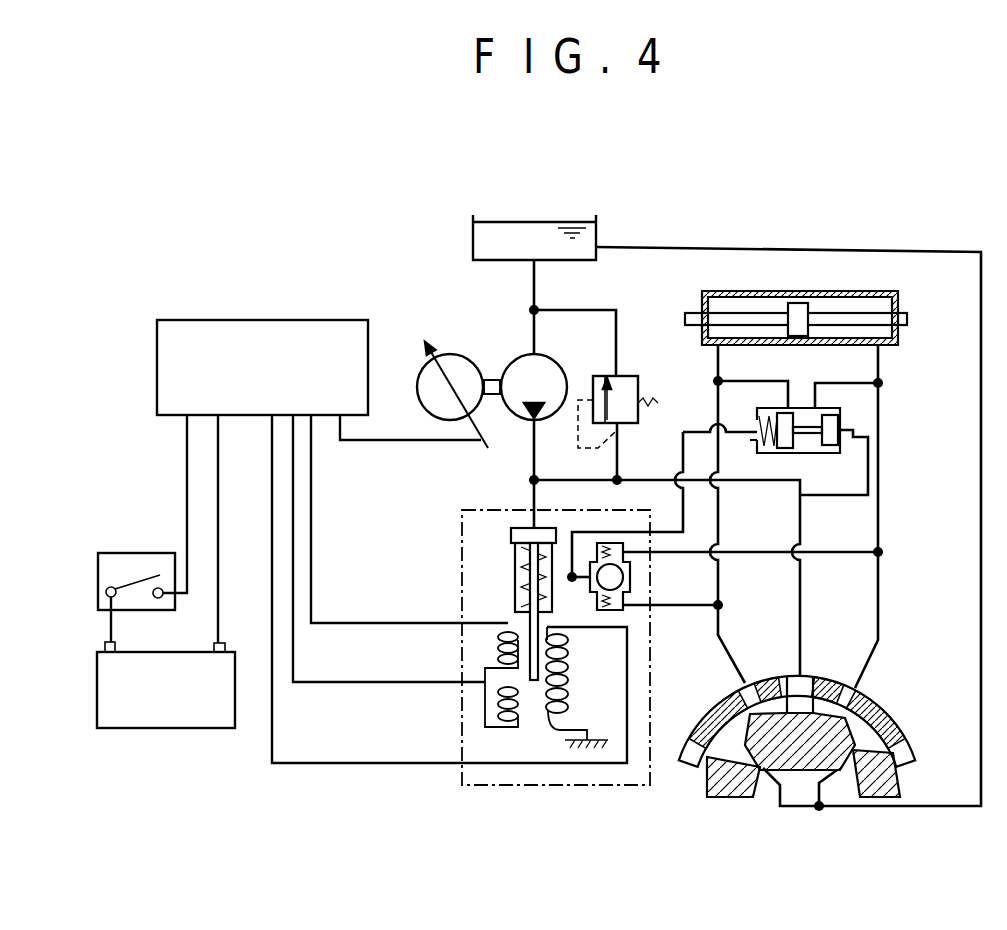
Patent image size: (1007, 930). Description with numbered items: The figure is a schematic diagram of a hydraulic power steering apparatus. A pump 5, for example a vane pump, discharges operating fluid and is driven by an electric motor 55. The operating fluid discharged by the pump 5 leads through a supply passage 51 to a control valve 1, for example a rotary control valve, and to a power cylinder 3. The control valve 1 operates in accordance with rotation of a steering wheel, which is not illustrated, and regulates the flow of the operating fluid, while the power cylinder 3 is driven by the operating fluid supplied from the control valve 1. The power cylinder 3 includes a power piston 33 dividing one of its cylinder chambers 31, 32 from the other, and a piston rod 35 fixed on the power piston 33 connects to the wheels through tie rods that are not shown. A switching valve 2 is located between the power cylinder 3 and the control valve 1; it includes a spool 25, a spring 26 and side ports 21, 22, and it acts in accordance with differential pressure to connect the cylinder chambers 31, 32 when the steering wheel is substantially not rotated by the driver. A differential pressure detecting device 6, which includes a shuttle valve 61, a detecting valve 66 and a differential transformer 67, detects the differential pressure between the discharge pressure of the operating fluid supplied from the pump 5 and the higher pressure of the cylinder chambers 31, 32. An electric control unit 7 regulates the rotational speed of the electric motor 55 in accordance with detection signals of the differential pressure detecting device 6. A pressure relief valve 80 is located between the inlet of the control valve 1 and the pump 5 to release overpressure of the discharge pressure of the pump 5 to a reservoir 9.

The control valve 1 is at (892, 707).
The switching valve 2 is at (824, 418).
The power cylinder 3 is at (821, 303).
The pump 5 is at (512, 355).
The differential pressure detecting device 6 is at (583, 701).
The electric control unit 7 is at (262, 320).
The reservoir 9 is at (597, 214).
The side port 21 is at (792, 406).
The side port 22 is at (813, 406).
The spool 25 is at (828, 447).
The spring 26 is at (765, 450).
The cylinder chamber 31 is at (724, 306).
The cylinder chamber 32 is at (848, 303).
The power piston 33 is at (798, 305).
The piston rod 35 is at (908, 320).
The supply passage 51 is at (714, 402).
The electric motor 55 is at (448, 342).
The shuttle valve 61 is at (625, 595).
The detecting valve 66 is at (515, 588).
The differential transformer 67 is at (576, 676).
The pressure relief valve 80 is at (625, 377).